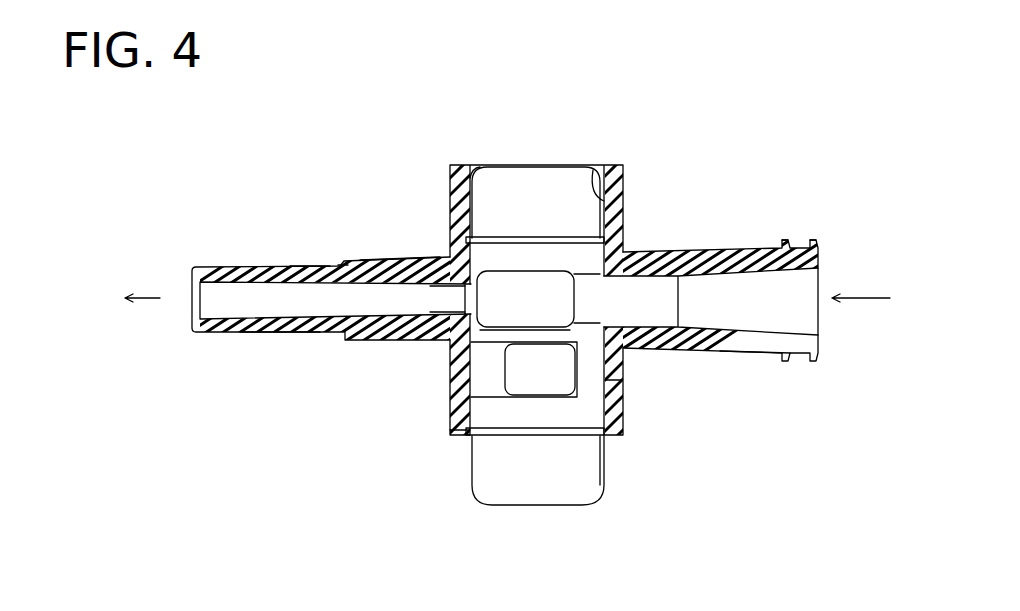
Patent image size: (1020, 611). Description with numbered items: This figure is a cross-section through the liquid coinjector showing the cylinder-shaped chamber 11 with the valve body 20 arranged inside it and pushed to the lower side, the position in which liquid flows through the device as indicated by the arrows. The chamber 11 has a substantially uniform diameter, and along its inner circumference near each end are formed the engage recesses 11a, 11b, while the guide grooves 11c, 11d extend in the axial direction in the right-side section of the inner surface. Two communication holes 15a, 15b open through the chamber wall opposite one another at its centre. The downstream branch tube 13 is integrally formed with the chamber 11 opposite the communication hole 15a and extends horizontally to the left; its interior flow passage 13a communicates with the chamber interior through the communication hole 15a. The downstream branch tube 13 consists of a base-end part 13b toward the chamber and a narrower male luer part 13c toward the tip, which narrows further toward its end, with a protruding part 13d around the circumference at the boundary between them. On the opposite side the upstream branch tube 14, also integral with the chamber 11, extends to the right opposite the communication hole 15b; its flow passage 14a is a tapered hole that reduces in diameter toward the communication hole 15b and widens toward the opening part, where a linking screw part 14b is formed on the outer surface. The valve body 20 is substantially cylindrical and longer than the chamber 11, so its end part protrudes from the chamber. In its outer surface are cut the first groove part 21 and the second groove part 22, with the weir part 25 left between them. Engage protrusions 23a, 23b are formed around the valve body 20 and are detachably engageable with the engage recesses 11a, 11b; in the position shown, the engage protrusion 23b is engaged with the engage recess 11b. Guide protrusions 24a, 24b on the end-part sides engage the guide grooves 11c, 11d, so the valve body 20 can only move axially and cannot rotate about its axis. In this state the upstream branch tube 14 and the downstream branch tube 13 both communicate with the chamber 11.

The valve body 20 is at (527, 148).
The chamber 11 is at (455, 190).
The engage recess 11a is at (476, 165).
The engage recess 11b is at (472, 436).
The guide groove 11c is at (592, 168).
The guide groove 11d is at (606, 393).
The downstream branch tube 13 is at (420, 218).
The flow passage 13a is at (278, 333).
The base-end part 13b is at (398, 260).
The male luer part 13c is at (305, 262).
The protruding part 13d is at (350, 262).
The upstream branch tube 14 is at (710, 249).
The flow passage 14a is at (755, 352).
The linking screw part 14b is at (798, 241).
The communication hole 15a is at (445, 316).
The communication hole 15b is at (640, 305).
The first groove part 21 is at (557, 282).
The second groove part 22 is at (487, 398).
The engage protrusion 23a is at (525, 238).
The engage protrusion 23b is at (523, 437).
The guide protrusion 24a is at (604, 215).
The guide protrusion 24b is at (606, 460).
The weir part 25 is at (522, 337).